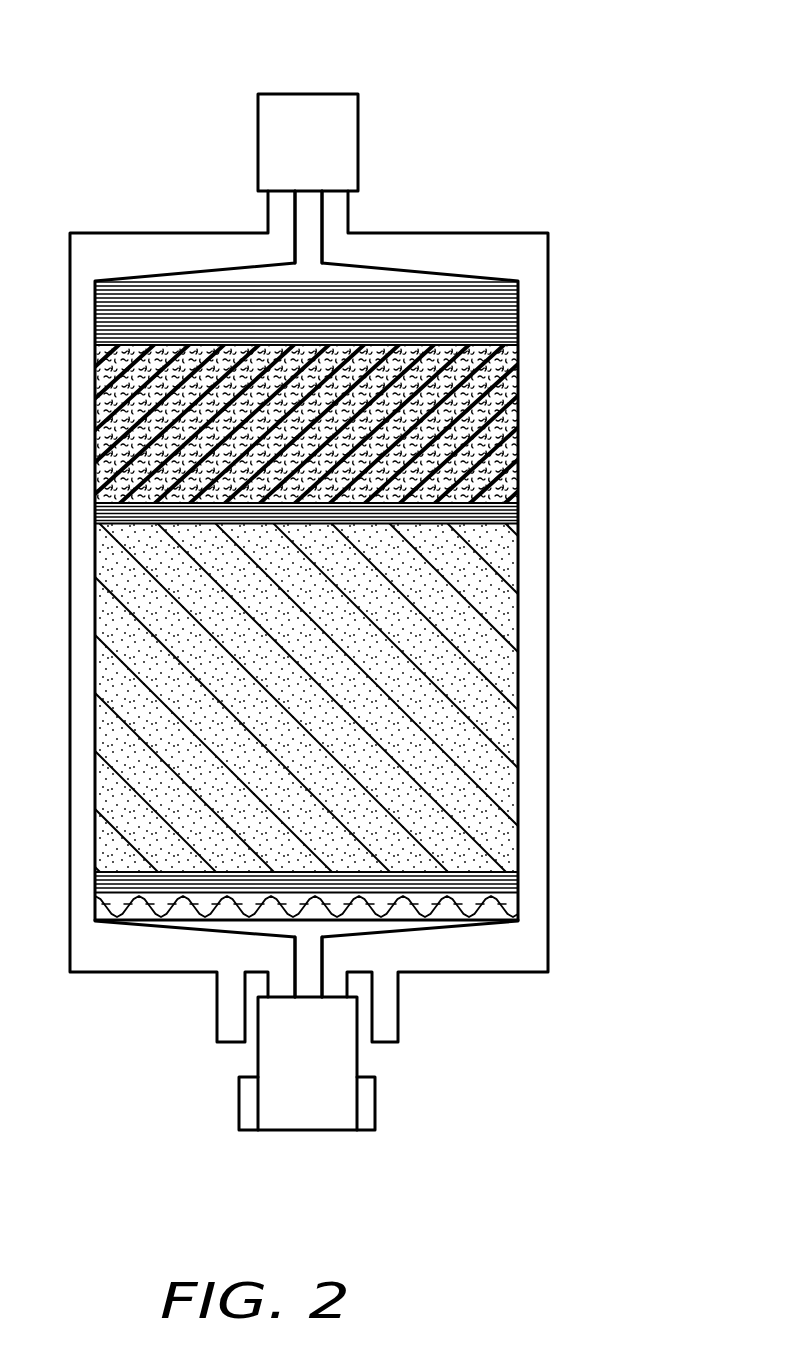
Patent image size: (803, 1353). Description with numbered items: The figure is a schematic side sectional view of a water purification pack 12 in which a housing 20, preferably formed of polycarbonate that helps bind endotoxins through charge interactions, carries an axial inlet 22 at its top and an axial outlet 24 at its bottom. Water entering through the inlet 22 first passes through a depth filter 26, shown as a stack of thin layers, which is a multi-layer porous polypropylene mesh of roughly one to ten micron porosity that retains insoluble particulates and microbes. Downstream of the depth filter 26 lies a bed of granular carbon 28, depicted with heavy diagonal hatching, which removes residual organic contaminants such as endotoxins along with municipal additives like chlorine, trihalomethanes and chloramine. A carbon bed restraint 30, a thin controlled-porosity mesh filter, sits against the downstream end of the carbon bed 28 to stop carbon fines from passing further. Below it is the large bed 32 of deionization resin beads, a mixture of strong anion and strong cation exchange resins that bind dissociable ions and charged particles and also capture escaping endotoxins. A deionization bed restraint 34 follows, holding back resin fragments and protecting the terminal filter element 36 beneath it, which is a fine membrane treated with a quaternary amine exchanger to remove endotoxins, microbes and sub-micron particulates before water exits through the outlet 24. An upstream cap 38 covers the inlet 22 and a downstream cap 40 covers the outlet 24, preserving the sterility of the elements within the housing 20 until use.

The water purification pack 12 is at (453, 42).
The housing 20 is at (548, 575).
The inlet 22 is at (308, 218).
The outlet 24 is at (307, 967).
The depth filter 26 is at (428, 305).
The bed of granular carbon 28 is at (503, 384).
The carbon bed restraint 30 is at (518, 505).
The bed of deionization resin beads 32 is at (490, 680).
The deionization bed restraint 34 is at (518, 865).
The terminal filter element 36 is at (510, 897).
The upstream cap 38 is at (318, 120).
The downstream cap 40 is at (335, 1062).